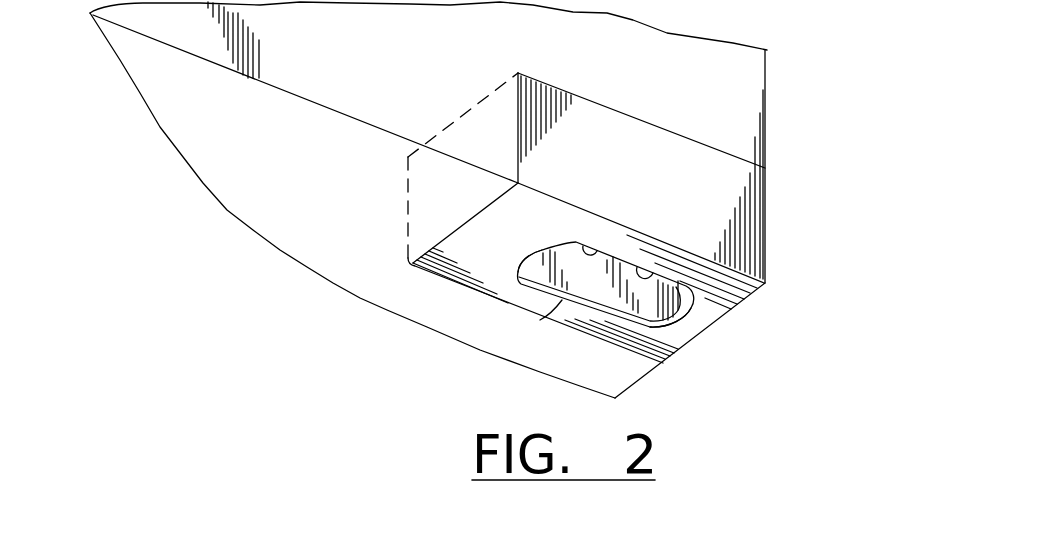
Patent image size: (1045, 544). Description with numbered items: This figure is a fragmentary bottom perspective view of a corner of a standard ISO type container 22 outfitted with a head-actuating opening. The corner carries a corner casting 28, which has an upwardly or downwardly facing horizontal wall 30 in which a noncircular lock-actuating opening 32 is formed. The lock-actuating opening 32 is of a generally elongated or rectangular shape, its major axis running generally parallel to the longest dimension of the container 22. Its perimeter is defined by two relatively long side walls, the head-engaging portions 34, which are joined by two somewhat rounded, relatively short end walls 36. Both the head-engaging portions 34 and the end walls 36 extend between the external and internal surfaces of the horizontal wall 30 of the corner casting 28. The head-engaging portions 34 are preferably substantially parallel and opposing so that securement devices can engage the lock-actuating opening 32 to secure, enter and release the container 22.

The container 22 is at (767, 103).
The corner casting 28 is at (733, 188).
The horizontal wall 30 is at (447, 280).
The lock-actuating opening 32 is at (603, 248).
The head-engaging portions 34 is at (662, 262).
The end walls 36 is at (533, 257).